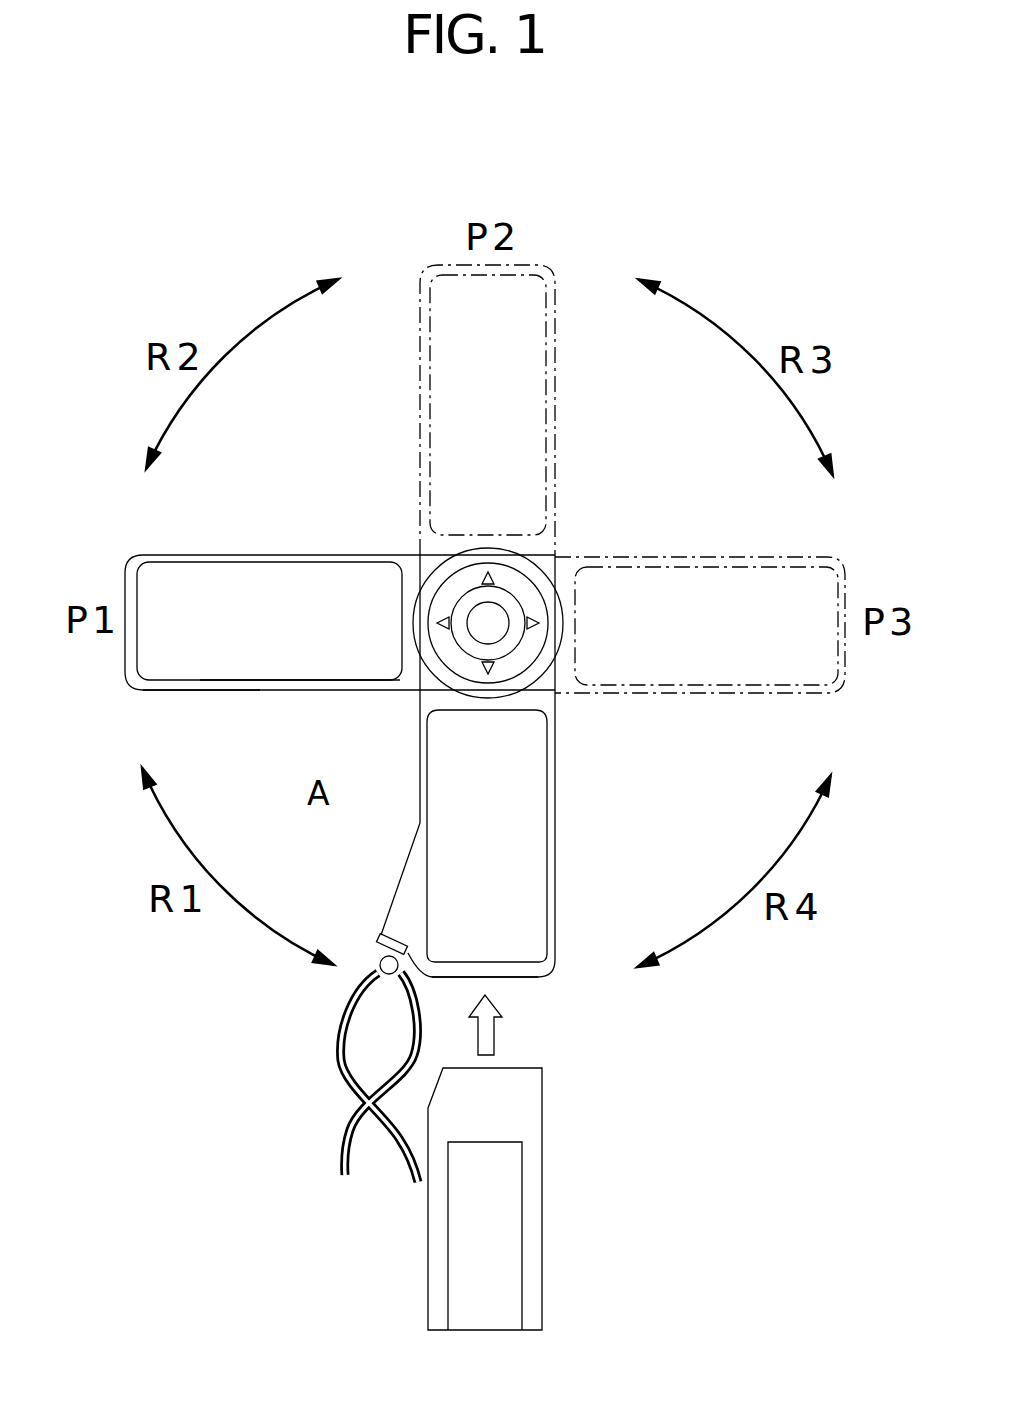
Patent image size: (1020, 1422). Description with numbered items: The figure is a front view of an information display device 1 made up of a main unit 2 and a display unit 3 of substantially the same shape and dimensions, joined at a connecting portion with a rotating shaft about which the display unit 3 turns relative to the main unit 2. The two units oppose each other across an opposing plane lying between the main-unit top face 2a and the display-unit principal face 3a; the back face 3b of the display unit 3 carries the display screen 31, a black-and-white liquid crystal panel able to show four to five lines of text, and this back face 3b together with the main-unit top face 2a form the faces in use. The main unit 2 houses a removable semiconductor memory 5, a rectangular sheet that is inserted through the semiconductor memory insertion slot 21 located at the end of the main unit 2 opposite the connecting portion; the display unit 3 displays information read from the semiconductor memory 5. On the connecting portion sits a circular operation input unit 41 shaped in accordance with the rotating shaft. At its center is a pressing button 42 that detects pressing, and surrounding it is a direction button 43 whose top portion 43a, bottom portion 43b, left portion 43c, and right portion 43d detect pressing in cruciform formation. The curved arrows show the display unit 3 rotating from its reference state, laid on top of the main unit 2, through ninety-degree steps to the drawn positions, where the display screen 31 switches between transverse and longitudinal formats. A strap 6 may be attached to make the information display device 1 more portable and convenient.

The information display device 1 is at (602, 267).
The main unit 2 is at (555, 903).
The main-unit top face 2a is at (553, 835).
The semiconductor memory insertion slot 21 is at (500, 983).
The display unit 3 is at (420, 393).
The display screen 31 is at (430, 440).
The display-unit principal face 3a is at (185, 690).
The back face 3b is at (255, 690).
The operation input unit 41 is at (662, 480).
The pressing button 42 is at (500, 590).
The direction button 43 is at (523, 577).
The top portion 43a is at (486, 576).
The bottom portion 43b is at (492, 672).
The left portion 43c is at (440, 630).
The right portion 43d is at (533, 630).
The semiconductor memory 5 is at (540, 1202).
The strap 6 is at (345, 1013).